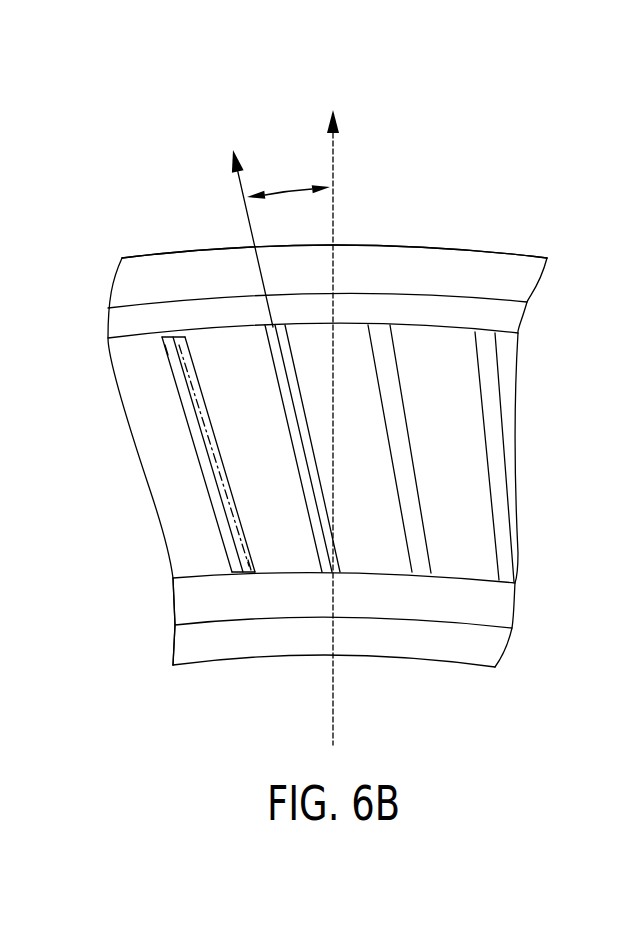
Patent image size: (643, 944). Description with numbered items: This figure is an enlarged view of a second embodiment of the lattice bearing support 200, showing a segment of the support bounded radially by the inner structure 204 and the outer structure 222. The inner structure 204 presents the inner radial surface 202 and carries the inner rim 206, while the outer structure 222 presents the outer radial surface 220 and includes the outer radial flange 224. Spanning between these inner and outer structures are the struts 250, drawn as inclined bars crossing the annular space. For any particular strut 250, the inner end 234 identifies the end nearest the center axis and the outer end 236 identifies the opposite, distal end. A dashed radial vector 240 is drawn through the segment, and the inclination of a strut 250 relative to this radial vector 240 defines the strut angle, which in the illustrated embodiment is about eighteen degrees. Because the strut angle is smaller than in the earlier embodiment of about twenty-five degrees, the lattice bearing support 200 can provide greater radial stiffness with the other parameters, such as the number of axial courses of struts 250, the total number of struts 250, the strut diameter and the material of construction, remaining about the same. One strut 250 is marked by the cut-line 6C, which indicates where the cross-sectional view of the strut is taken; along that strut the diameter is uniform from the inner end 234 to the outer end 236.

The lattice bearing support 200 is at (563, 217).
The inner radial surface 202 is at (442, 622).
The inner structure 204 is at (357, 598).
The inner rim 206 is at (252, 637).
The outer radial surface 220 is at (363, 290).
The outer structure 222 is at (480, 310).
The outer radial flange 224 is at (445, 247).
The inner end 234 is at (242, 578).
The outer end 236 is at (168, 330).
The radial vector 240 is at (335, 162).
The strut 250 is at (318, 490).
The cut-line 6C- 6C is at (172, 330).